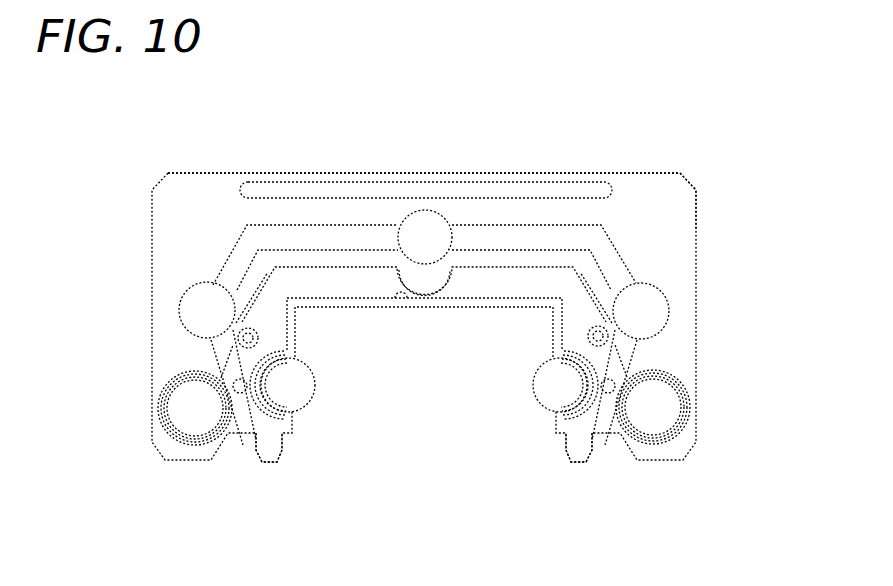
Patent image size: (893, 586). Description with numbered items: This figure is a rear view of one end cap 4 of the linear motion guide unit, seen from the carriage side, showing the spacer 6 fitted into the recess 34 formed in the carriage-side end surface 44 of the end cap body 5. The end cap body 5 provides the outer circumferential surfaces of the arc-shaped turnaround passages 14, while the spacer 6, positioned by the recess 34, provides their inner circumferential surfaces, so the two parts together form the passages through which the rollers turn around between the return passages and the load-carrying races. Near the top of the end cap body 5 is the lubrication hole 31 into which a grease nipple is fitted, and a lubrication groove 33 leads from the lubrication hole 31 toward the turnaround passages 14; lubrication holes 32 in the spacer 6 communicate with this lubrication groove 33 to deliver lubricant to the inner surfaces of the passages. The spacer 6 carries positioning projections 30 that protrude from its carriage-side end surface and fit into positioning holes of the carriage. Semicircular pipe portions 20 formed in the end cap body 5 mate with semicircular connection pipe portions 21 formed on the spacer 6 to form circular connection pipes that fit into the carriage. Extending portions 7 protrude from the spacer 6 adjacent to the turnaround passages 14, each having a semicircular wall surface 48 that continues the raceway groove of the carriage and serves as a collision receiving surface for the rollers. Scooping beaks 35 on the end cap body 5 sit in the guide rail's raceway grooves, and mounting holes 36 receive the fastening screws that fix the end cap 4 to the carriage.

The end cap 4 is at (581, 172).
The end cap body 5 is at (640, 197).
The spacer 6 is at (495, 212).
The extending portion 7 is at (280, 436).
The turnaround passage 14 is at (182, 407).
The pipe portion 20 is at (173, 437).
The connection pipe portion 21 is at (240, 395).
The positioning projection 30 is at (237, 334).
The lubrication hole 31 is at (427, 210).
The lubrication hole 32 is at (236, 422).
The lubrication groove 33 is at (370, 212).
The recess 34 is at (333, 212).
The scooping beak 35 is at (317, 380).
The mounting hole 36 is at (188, 297).
The end surface 44 is at (215, 190).
The semicircular wall surface 48 is at (298, 358).